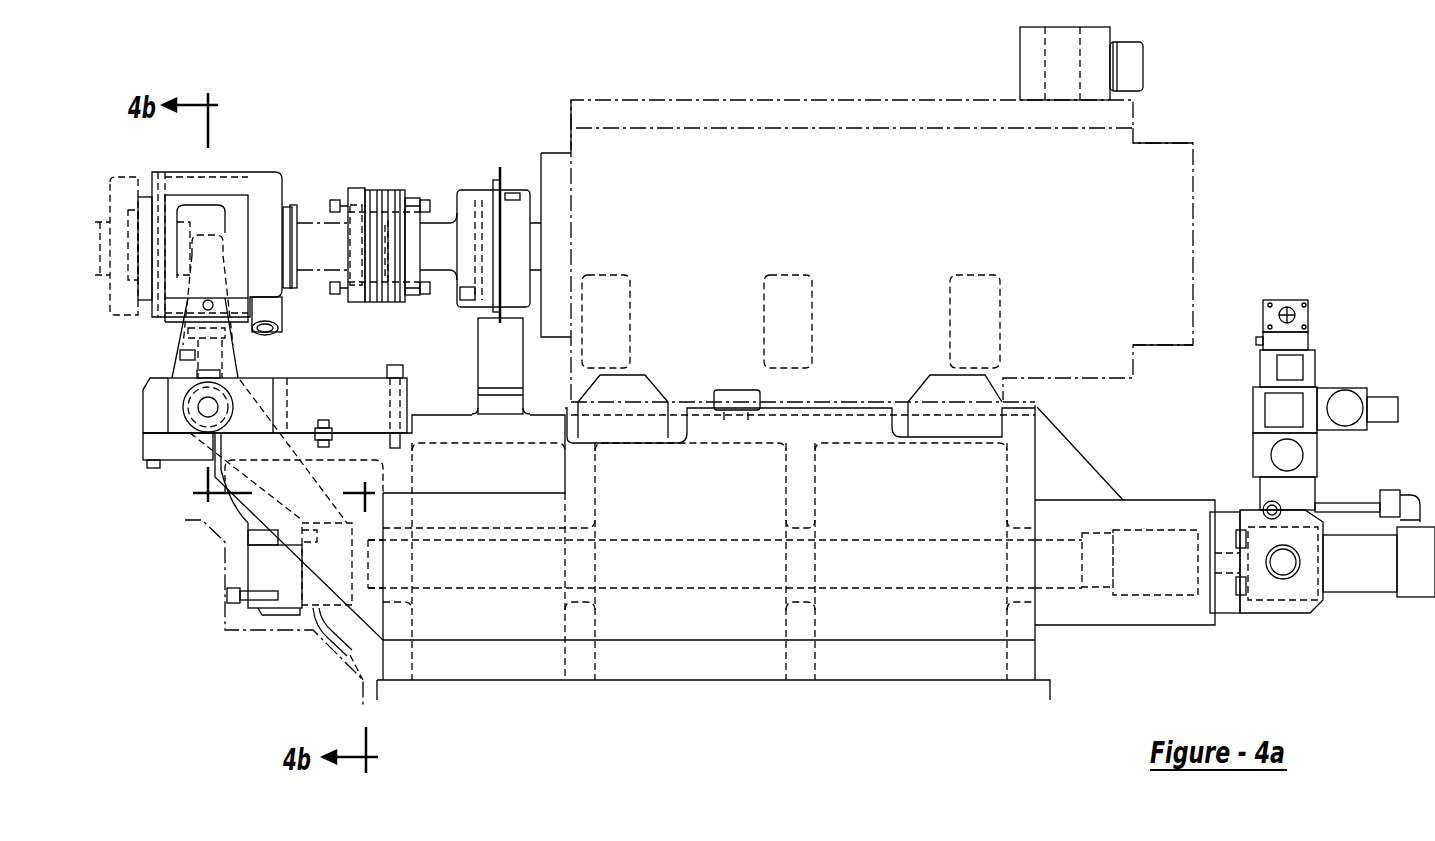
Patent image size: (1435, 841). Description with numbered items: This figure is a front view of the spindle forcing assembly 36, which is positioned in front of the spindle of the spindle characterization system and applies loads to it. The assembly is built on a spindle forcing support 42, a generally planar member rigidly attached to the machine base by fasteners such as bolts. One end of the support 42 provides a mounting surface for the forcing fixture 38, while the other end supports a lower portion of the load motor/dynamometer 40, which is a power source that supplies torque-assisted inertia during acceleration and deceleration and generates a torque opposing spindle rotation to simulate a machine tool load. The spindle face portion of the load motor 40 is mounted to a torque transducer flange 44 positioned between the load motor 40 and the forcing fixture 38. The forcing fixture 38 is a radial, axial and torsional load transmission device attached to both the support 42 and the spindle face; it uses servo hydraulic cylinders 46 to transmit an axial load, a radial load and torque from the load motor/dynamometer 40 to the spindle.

The spindle forcing assembly 36 is at (737, 63).
The forcing fixture 38 is at (215, 173).
The load motor/dynamometer 40 is at (852, 100).
The spindle forcing support 42 is at (1040, 655).
The torque transducer flange 44 is at (500, 167).
The servo hydraulic cylinder 46 is at (1355, 600).